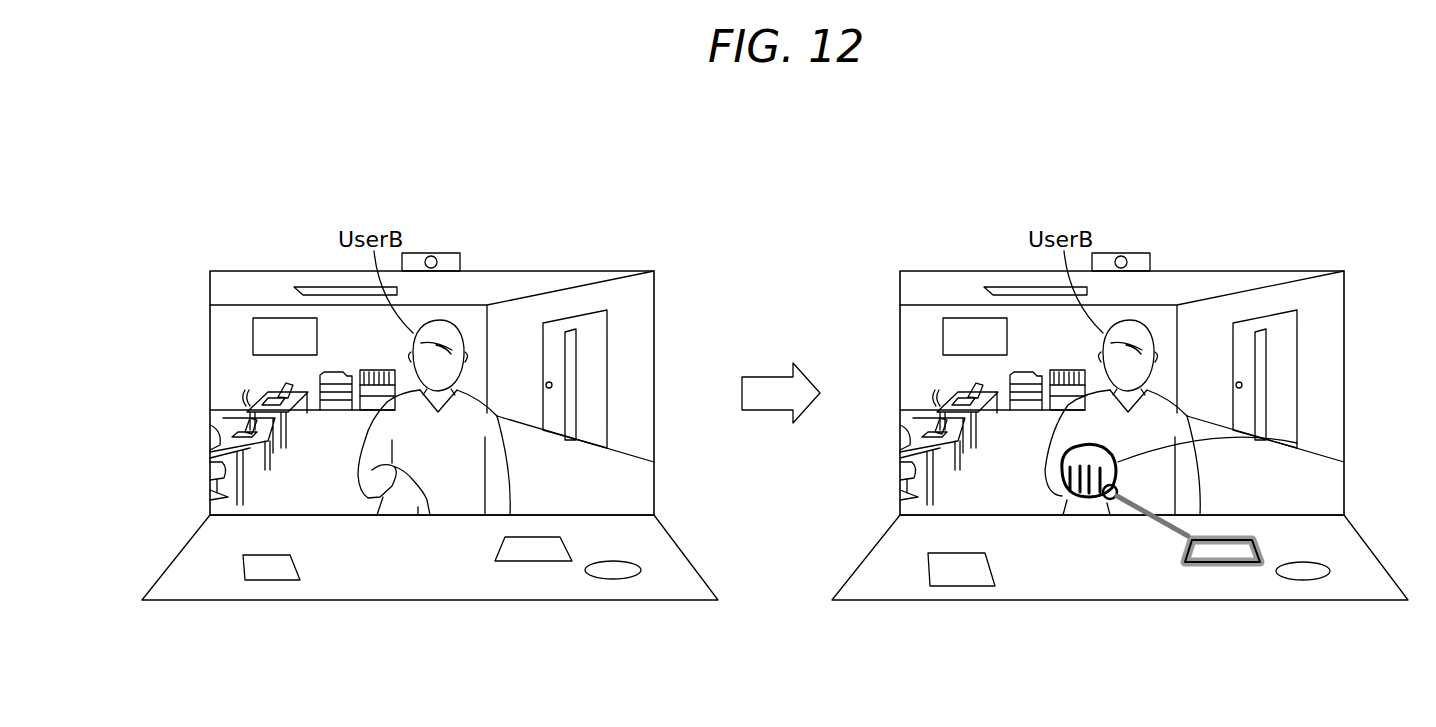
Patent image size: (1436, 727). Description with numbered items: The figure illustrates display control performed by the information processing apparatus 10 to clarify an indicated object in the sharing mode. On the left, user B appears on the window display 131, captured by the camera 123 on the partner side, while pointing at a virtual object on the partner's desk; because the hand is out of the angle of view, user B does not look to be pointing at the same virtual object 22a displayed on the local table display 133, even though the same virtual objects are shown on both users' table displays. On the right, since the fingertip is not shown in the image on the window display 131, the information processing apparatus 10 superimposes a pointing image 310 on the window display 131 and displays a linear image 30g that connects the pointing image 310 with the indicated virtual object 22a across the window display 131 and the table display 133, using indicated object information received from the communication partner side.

The information processing apparatus 10 is at (623, 226).
The camera 123 is at (440, 253).
The window display 131 is at (655, 290).
The table display 133 is at (677, 543).
The virtual object 22a is at (521, 563).
The linear image 30g is at (1175, 527).
The pointing image 310 is at (1297, 443).